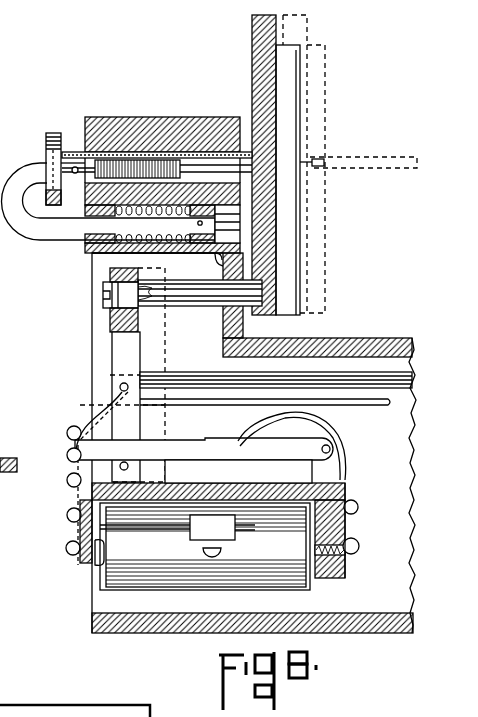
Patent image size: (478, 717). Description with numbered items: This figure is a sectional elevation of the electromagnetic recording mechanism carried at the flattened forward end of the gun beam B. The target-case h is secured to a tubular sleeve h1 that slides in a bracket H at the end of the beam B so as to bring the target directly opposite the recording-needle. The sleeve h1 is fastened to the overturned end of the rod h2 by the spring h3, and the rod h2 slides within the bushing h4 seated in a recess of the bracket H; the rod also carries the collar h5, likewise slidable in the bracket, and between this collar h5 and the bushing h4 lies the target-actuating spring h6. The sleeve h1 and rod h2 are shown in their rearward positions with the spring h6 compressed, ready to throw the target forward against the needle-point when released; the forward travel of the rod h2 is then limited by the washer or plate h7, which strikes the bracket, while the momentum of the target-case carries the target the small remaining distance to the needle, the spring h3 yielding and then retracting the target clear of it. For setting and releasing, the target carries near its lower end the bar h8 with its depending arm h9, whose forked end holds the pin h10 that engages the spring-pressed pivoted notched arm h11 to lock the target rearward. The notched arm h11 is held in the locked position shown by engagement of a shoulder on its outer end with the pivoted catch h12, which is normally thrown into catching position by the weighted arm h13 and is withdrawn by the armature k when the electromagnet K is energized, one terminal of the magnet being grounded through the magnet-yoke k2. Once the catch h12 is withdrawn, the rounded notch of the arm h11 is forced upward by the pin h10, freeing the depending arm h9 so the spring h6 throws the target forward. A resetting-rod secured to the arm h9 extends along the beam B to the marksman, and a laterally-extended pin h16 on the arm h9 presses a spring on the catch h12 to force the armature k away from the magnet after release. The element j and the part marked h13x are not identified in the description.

The target-case h is at (252, 50).
The bracket H is at (190, 117).
The tubular sleeve h1 is at (157, 152).
The rod h2 is at (53, 231).
The spring h3 is at (88, 118).
The bushing h4 is at (88, 241).
The collar h5 is at (242, 217).
The target-actuating spring h6 is at (160, 248).
The washer or plate h7 is at (52, 134).
The bar h8 is at (213, 305).
The depending arm h9 is at (118, 366).
The pin h10 is at (129, 465).
The notched arm h11 is at (208, 456).
The catch h12 is at (82, 489).
The weighted arm h13 is at (316, 376).
The contact block h13x is at (150, 528).
The laterally-extended pin h16 is at (127, 385).
The connector j is at (372, 158).
The beam B is at (406, 476).
The electromagnet K is at (202, 546).
The armature k is at (80, 563).
The magnet-yoke k2 is at (332, 577).